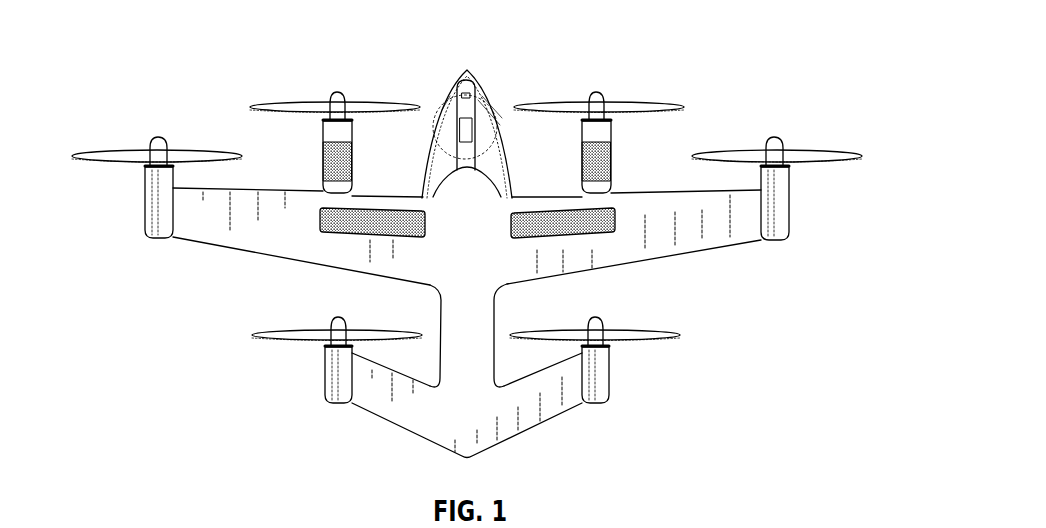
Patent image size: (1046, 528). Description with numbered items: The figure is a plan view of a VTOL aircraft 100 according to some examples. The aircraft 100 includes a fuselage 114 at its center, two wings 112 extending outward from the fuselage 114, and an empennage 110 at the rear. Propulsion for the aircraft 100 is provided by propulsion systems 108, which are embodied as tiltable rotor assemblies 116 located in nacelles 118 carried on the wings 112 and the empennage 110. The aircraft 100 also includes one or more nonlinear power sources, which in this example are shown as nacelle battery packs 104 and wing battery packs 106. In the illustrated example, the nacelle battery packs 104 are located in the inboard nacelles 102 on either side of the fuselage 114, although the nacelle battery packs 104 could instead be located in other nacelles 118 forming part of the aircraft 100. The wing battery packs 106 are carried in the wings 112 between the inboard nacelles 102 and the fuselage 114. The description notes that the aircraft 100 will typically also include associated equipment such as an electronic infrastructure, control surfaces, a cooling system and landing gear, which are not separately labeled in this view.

The VTOL aircraft 100 is at (712, 92).
The inboard nacelle 102 is at (353, 134).
The nacelle battery pack 104 is at (330, 170).
The wing battery pack 106 is at (322, 233).
The propulsion system 108 is at (598, 115).
The empennage 110 is at (382, 410).
The wing 112 is at (233, 242).
The fuselage 114 is at (446, 292).
The tiltable rotor assembly 116 is at (159, 141).
The nacelle 118 is at (152, 196).